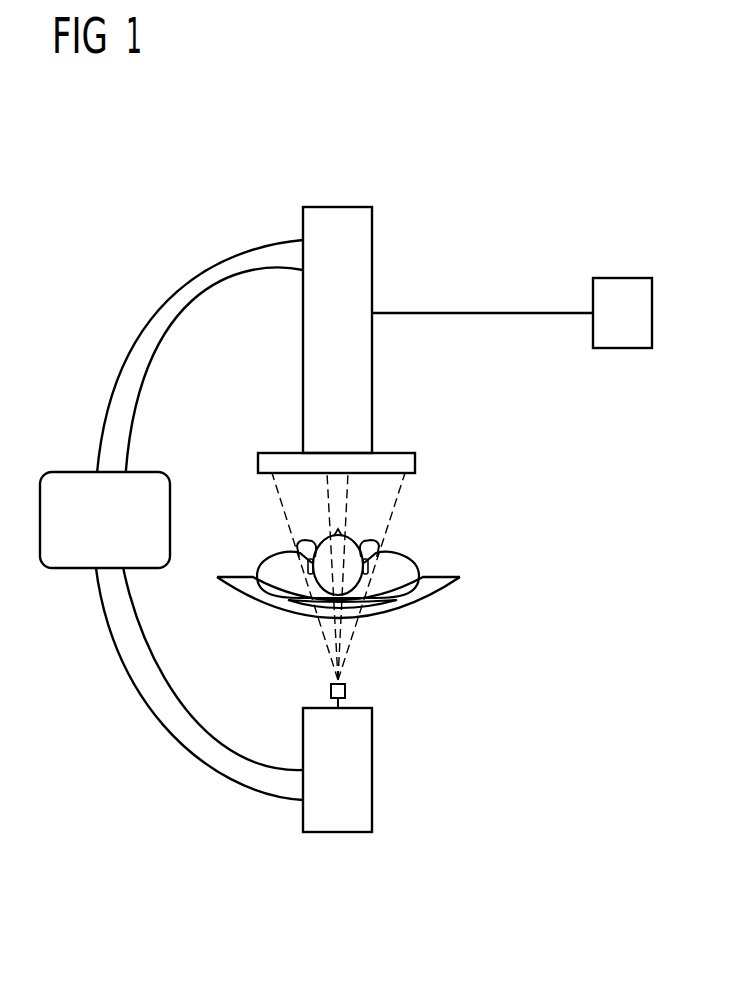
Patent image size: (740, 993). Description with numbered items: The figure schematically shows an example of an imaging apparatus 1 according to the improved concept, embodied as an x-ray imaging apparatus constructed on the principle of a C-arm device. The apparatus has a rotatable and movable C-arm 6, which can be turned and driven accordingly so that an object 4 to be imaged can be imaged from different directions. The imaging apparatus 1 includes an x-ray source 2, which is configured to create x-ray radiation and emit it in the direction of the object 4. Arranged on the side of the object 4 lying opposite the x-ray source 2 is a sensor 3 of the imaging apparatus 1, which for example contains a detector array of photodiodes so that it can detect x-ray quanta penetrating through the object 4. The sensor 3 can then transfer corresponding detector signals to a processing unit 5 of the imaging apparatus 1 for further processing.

The imaging apparatus 1 is at (533, 158).
The x-ray source 2 is at (372, 769).
The sensor 3 is at (417, 460).
The object 4 is at (410, 563).
The processing unit 5 is at (622, 278).
The C-arm 6 is at (124, 368).